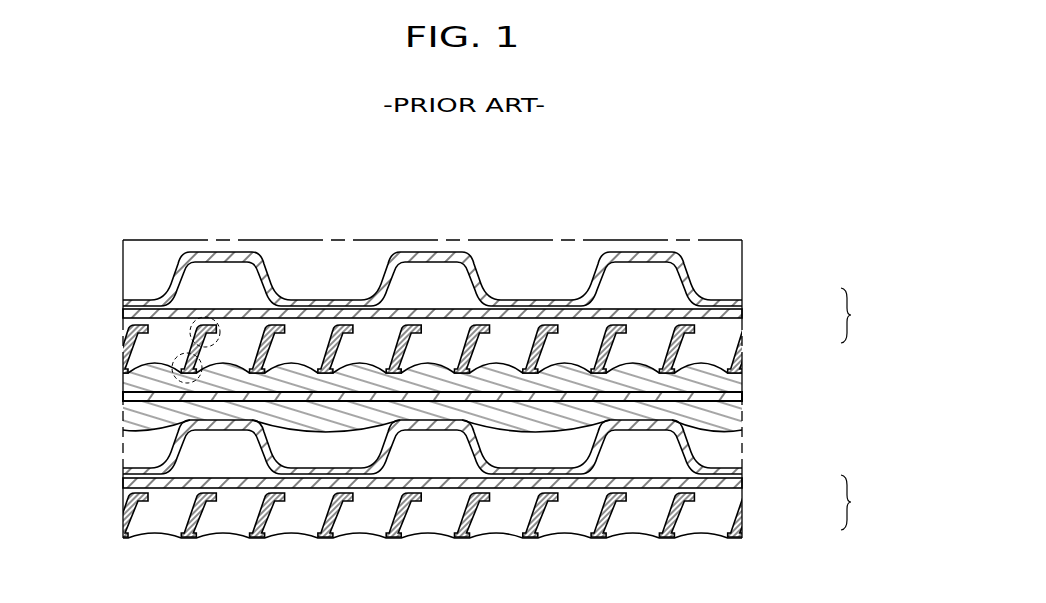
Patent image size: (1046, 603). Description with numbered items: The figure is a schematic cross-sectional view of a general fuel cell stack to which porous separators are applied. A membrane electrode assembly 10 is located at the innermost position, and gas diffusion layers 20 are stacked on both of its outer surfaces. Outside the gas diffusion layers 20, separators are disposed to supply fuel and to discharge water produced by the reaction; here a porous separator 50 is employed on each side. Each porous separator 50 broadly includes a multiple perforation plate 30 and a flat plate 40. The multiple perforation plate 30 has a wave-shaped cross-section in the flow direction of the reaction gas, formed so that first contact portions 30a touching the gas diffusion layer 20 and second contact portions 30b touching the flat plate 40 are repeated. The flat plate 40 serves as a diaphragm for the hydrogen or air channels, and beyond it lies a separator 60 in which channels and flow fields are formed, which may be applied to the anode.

The membrane electrode assembly 10 is at (736, 399).
The gas diffusion layer 20 is at (737, 384).
The multiple perforation plate 30 is at (692, 346).
The first contact portion 30a is at (173, 357).
The second contact portion 30b is at (224, 330).
The flat plate 40 is at (738, 315).
The porous separator 50 is at (862, 409).
The separator 60 is at (692, 262).